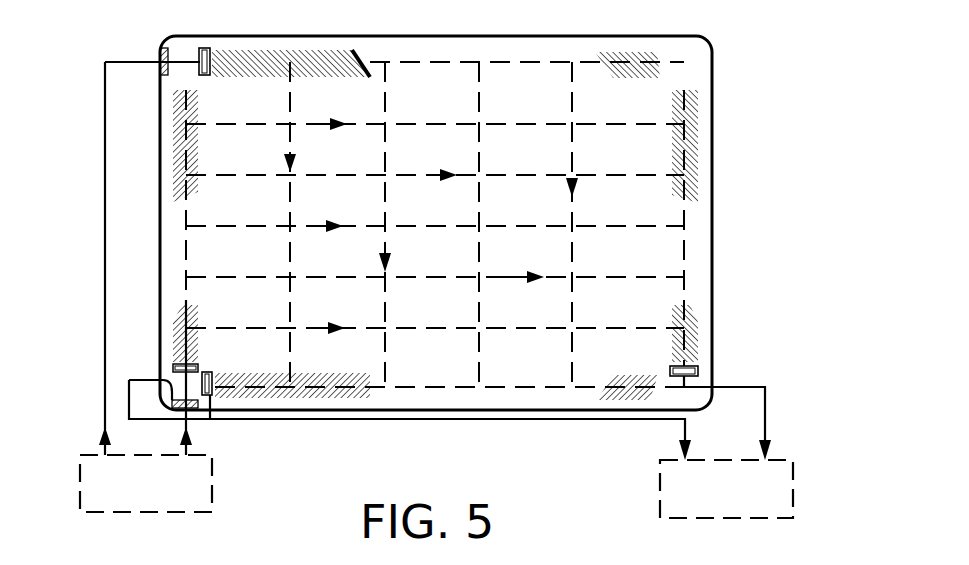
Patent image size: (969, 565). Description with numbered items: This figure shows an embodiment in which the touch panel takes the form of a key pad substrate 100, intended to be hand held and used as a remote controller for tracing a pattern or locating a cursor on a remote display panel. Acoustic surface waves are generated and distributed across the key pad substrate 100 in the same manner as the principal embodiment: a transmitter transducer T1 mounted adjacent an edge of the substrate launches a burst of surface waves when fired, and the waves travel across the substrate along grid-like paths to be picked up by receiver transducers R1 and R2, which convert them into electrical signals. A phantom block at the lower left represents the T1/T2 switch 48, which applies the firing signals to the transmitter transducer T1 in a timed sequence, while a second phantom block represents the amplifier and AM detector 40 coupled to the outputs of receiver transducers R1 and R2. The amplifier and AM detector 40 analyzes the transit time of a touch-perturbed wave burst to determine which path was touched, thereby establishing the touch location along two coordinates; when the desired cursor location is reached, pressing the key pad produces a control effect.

The key pad substrate 100 is at (712, 218).
The transmitter transducer T1 is at (204, 48).
The receiver transducer R1 is at (216, 410).
The receiver transducer R2 is at (698, 371).
The T1/T2 switch 48 is at (80, 493).
The amplifier and AM detector 40 is at (793, 497).